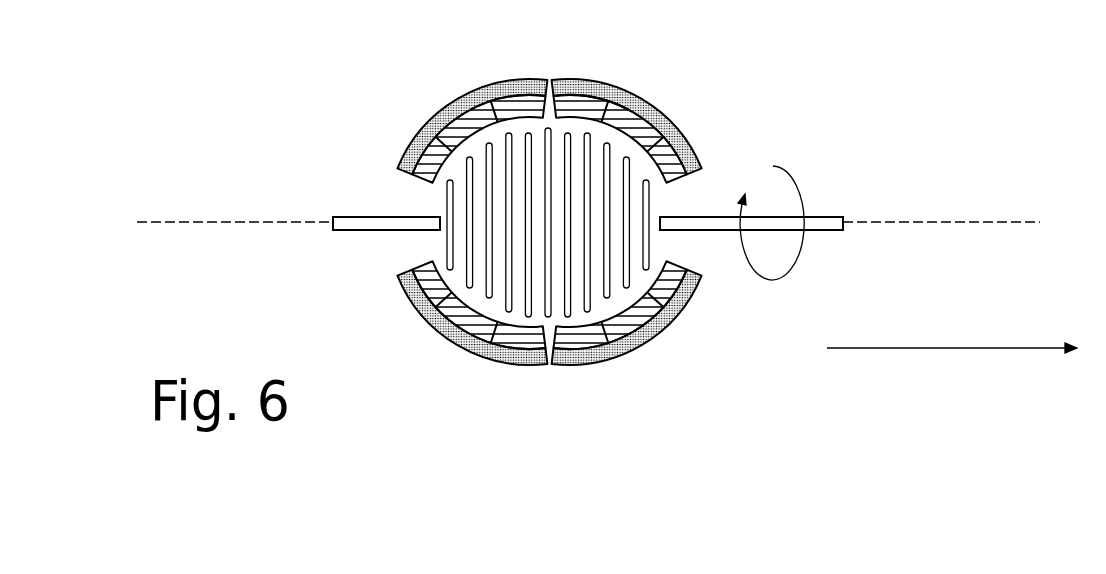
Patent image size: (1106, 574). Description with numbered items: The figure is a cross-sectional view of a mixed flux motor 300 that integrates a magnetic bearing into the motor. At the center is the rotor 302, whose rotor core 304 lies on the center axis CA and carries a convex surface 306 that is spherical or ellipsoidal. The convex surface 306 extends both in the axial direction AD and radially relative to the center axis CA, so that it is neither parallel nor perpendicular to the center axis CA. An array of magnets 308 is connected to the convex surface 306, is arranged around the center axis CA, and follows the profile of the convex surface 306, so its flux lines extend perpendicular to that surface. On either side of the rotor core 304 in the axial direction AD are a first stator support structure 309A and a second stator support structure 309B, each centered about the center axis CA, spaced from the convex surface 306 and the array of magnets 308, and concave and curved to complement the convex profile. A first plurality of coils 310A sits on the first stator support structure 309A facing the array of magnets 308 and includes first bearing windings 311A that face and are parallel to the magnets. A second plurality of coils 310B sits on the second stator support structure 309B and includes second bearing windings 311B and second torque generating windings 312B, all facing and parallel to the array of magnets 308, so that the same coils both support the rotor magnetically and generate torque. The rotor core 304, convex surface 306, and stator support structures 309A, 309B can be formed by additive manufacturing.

The mixed flux motor 300 is at (328, 117).
The rotor 302 is at (348, 217).
The rotor core 304 is at (648, 247).
The convex surface 306 is at (590, 229).
The array of magnets 308 is at (467, 240).
The first stator support structure 309A is at (497, 360).
The second stator support structure 309B is at (575, 360).
The first plurality of coils 310A is at (447, 108).
The second plurality of coils 310B is at (637, 110).
The first bearing windings 311A is at (522, 103).
The second bearing windings 311B is at (583, 340).
The second torque generating windings 312B is at (468, 323).
The center axis CA is at (920, 222).
The axial direction AD is at (945, 345).